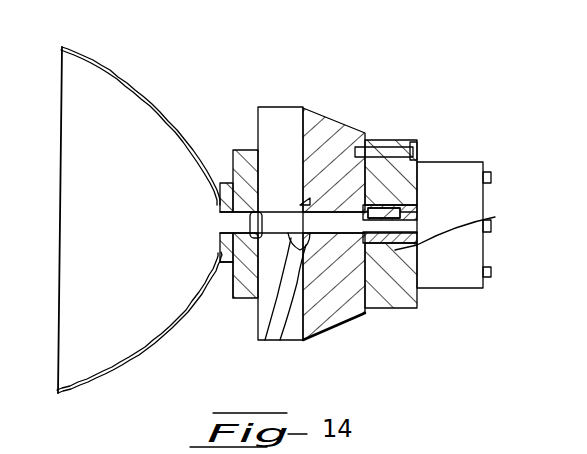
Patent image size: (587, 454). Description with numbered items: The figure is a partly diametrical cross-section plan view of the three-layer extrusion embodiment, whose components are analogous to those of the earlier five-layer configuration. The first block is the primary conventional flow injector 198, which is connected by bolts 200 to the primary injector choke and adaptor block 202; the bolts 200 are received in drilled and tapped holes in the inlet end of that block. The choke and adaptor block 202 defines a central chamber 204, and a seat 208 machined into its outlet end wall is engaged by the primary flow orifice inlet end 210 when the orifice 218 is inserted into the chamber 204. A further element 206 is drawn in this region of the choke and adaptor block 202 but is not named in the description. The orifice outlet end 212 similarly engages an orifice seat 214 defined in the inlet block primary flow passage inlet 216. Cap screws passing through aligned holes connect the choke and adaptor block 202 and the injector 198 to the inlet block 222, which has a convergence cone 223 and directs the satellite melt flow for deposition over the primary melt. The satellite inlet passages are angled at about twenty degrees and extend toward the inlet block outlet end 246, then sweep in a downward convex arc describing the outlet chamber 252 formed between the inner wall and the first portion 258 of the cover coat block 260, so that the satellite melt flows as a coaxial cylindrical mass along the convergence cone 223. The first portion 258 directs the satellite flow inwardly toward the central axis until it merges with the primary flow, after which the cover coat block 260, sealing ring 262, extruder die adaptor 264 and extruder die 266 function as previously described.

The primary conventional flow injector 198 is at (447, 162).
The bolts 200 is at (493, 167).
The primary injector choke and adaptor block 202 is at (408, 312).
The central chamber 204 is at (383, 203).
The shaft 206 is at (323, 210).
The seat 208 is at (400, 213).
The primary flow orifice inlet end 210 is at (406, 200).
The orifice outlet end 212 is at (395, 267).
The orifice seat 214 is at (358, 210).
The inlet block primary flow passage inlet 216 is at (352, 226).
The orifice 218 is at (492, 180).
The inlet block 222 is at (352, 328).
The convergence cone 223 is at (263, 342).
The inlet block outlet end 246 is at (306, 125).
The outlet chamber 252 is at (280, 340).
The cover coat block first portion 258 is at (290, 208).
The cover coat block 260 is at (296, 107).
The sealing ring 262 is at (233, 150).
The extruder die adaptor 264 is at (222, 290).
The extruder die 266 is at (106, 373).